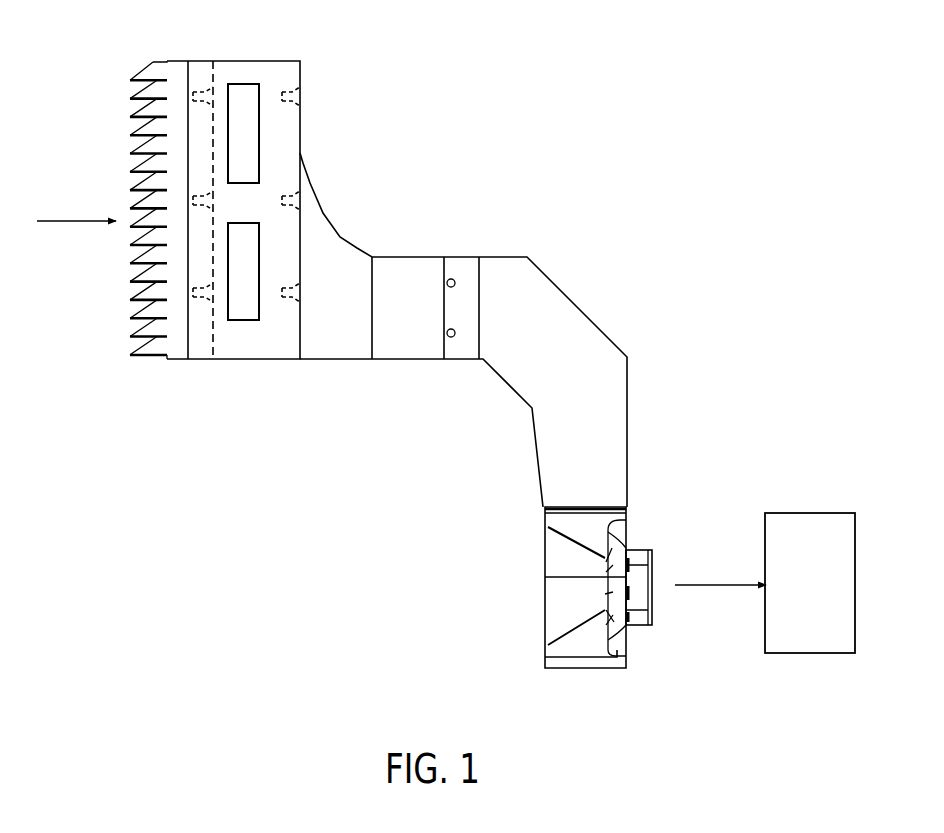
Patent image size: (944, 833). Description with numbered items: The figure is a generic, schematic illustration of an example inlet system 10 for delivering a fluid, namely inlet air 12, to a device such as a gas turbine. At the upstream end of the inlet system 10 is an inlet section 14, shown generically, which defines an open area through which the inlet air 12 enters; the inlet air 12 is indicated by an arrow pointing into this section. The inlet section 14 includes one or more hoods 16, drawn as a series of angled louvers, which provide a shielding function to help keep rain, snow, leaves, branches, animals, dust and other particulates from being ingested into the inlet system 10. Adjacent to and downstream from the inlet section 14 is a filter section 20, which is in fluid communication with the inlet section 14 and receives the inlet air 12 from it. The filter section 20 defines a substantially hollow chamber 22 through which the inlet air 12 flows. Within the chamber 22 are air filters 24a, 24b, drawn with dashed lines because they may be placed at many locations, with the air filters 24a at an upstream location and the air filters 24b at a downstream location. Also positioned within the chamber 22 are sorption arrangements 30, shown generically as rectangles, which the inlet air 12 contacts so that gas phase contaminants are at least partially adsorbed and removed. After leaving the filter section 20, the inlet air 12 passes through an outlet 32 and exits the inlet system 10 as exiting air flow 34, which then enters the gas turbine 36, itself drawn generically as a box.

The inlet system 10 is at (486, 82).
The inlet air 12 is at (72, 220).
The inlet section 14 is at (147, 227).
The hoods 16 is at (147, 73).
The filter section 20 is at (245, 384).
The chamber 22 is at (202, 68).
The air filters 24a is at (201, 299).
The air filters 24b is at (288, 299).
The sorption arrangements 30 is at (259, 108).
The outlet 32 is at (653, 612).
The exiting air flow 34 is at (712, 583).
The gas turbine 36 is at (812, 513).